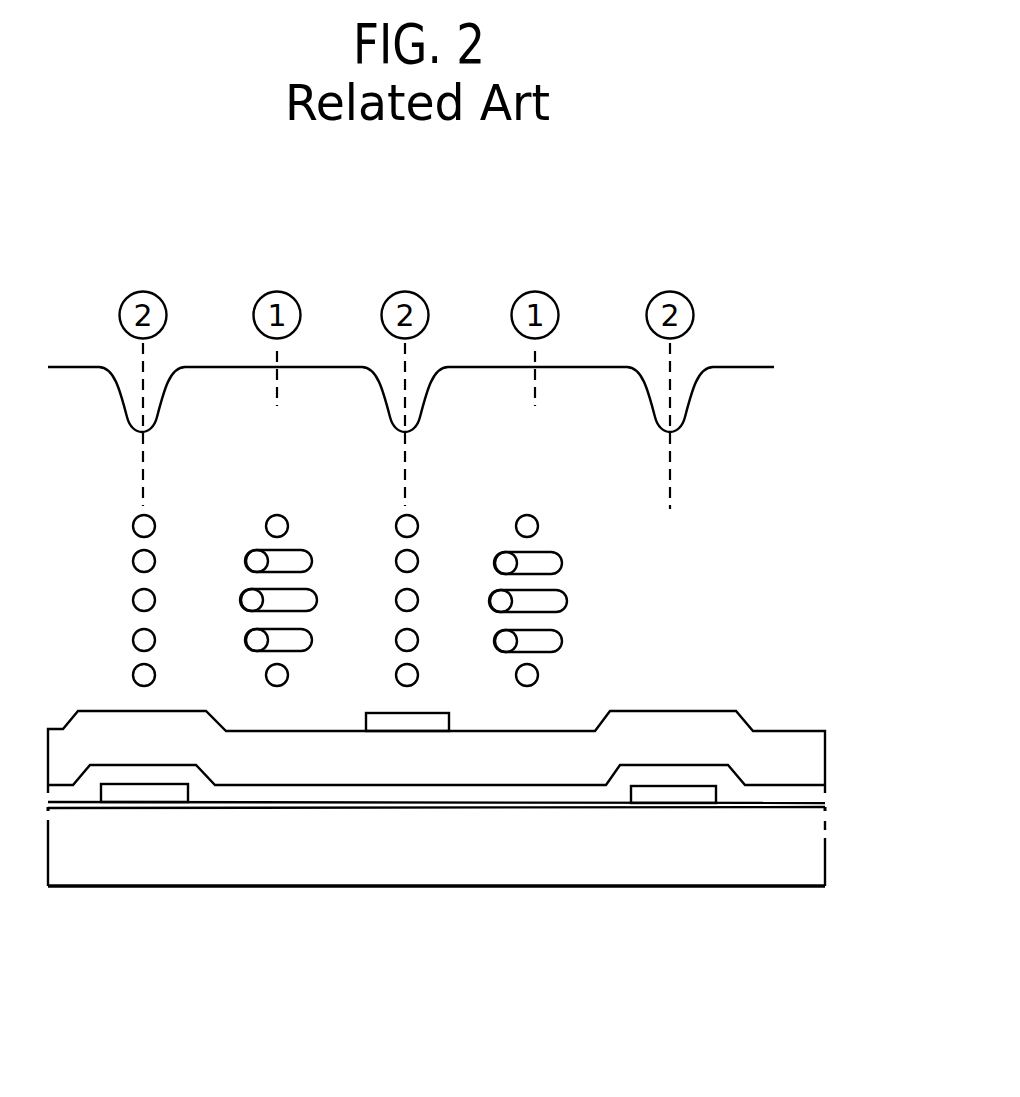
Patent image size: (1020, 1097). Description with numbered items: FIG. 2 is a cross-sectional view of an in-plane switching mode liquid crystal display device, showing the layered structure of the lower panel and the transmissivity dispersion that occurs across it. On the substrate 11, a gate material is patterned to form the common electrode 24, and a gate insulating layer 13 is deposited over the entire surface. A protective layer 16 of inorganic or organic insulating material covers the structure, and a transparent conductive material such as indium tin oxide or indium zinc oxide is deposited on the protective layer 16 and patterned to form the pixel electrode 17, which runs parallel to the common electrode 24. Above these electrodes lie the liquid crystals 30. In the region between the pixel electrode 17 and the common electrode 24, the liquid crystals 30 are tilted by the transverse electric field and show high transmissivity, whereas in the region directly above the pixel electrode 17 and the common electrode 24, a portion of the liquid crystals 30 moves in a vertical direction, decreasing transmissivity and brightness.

The substrate 11 is at (811, 841).
The gate insulating layer 13 is at (811, 791).
The protective layer 16 is at (811, 756).
The pixel electrode 17 is at (403, 725).
The common electrode 24 is at (133, 792).
The liquid crystals 30 is at (553, 603).